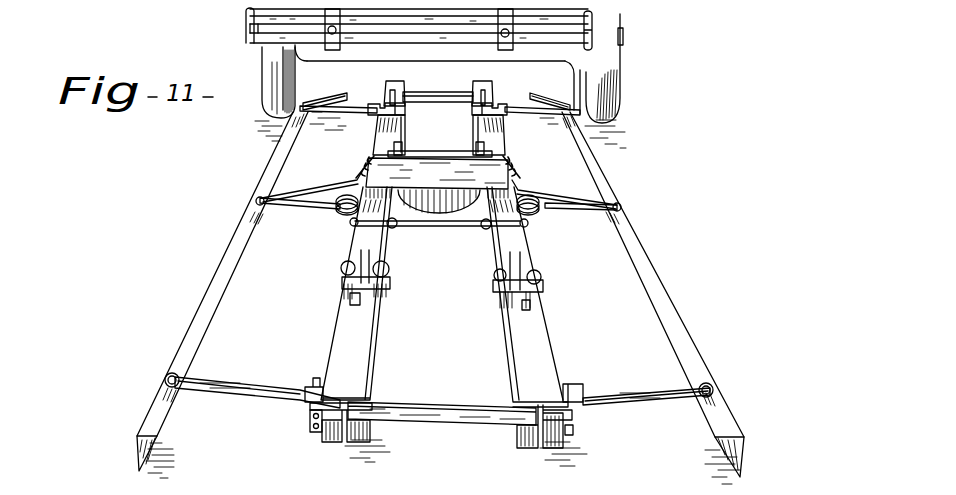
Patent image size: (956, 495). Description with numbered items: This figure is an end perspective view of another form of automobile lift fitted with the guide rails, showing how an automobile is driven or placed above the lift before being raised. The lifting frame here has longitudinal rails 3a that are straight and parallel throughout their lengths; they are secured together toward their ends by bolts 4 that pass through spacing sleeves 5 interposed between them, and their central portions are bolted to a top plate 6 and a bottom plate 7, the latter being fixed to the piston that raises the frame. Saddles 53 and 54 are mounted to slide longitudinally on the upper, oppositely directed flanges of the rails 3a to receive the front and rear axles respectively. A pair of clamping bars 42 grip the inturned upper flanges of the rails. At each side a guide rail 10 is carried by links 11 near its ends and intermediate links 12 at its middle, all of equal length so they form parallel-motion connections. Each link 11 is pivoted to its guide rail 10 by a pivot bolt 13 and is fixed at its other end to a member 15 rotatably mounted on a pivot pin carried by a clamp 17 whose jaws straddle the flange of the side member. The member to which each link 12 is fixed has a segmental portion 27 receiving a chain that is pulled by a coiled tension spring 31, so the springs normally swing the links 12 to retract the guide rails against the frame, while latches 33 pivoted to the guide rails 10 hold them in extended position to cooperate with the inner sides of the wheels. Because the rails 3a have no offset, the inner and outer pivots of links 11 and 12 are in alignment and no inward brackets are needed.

The longitudinal rail 3a is at (333, 350).
The bolt 4 is at (337, 411).
The spacing sleeve 5 is at (432, 93).
The top plate 6 is at (437, 185).
The bottom plate 7 is at (415, 230).
The guide rail 10 is at (228, 262).
The link 11 is at (346, 111).
The link 12 is at (297, 208).
The pivot bolt 13 is at (318, 98).
The member 15 is at (316, 382).
The clamp 17 is at (322, 428).
The segmental portion 27 is at (347, 214).
The coiled tension spring 31 is at (366, 158).
The latch 33 is at (318, 193).
The clamping bar 42 is at (440, 151).
The saddle 53 is at (468, 112).
The saddle 54 is at (493, 275).